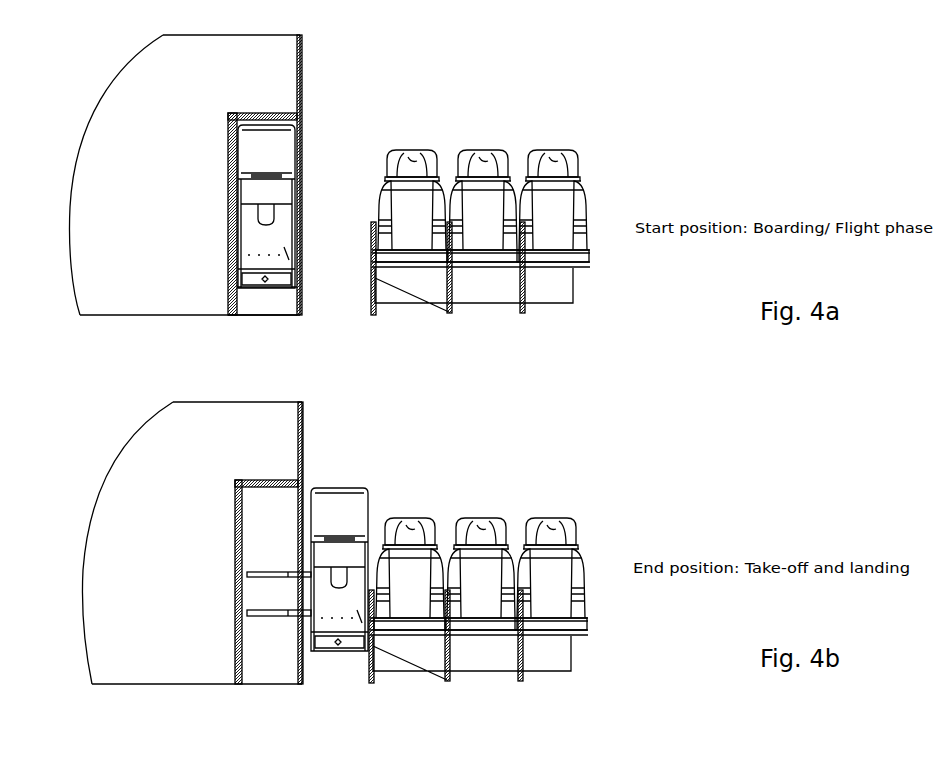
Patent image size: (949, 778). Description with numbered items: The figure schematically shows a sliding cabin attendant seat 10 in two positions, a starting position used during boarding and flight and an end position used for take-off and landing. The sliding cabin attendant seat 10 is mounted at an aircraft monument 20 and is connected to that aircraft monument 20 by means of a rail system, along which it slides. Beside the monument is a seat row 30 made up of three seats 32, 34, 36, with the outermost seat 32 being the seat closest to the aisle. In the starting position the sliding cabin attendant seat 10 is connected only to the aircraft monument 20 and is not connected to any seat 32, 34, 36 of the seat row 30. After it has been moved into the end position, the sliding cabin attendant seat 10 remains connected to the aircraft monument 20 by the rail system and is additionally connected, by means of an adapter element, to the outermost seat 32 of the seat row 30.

In FIG. 4a, the sliding cabin attendant seat 10 is at (300, 303).
In FIG. 4b, the sliding cabin attendant seat 10 is at (338, 510).
In FIG. 4a, the aircraft monument 20 is at (160, 293).
In FIG. 4b, the aircraft monument 20 is at (168, 427).
In FIG. 4a, the seat row 30 is at (480, 251).
In FIG. 4b, the seat row 30 is at (478, 538).
In FIG. 4a, the outermost seat 32 is at (400, 158).
In FIG. 4b, the outermost seat 32 is at (408, 516).
In FIG. 4a, the seat 34 is at (476, 158).
In FIG. 4b, the seat 34 is at (470, 516).
In FIG. 4a, the seat 36 is at (546, 158).
In FIG. 4b, the seat 36 is at (549, 555).